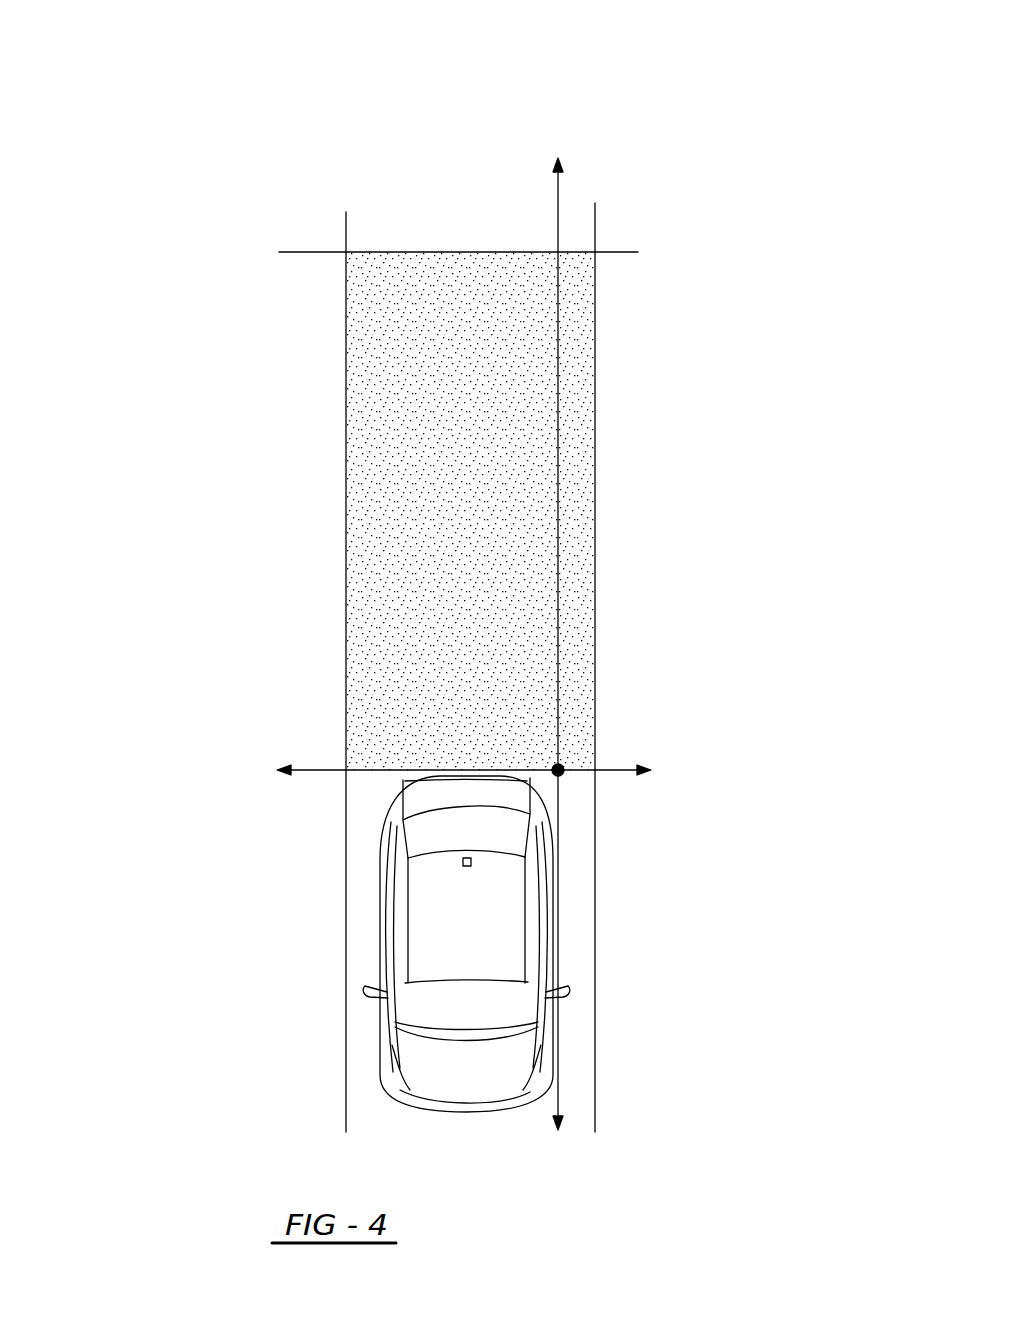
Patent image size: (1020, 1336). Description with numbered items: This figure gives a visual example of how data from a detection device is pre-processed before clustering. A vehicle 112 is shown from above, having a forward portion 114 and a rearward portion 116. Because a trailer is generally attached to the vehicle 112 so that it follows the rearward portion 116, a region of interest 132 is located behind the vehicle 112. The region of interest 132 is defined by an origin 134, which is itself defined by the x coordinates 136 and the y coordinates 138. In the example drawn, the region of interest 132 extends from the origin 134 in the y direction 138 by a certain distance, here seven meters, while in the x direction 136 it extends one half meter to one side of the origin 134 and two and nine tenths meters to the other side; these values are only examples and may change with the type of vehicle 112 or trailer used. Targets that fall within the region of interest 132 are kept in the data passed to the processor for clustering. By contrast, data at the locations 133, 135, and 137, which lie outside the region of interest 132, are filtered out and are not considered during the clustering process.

The vehicle 112 is at (588, 1009).
The forward portion 114 is at (502, 1166).
The rearward portion 116 is at (508, 800).
The region of interest 132 is at (495, 428).
The location 133 is at (663, 611).
The origin 134 is at (558, 770).
The location 135 is at (210, 628).
The x coordinates 136 is at (612, 770).
The location 137 is at (440, 143).
The y coordinates 138 is at (558, 210).